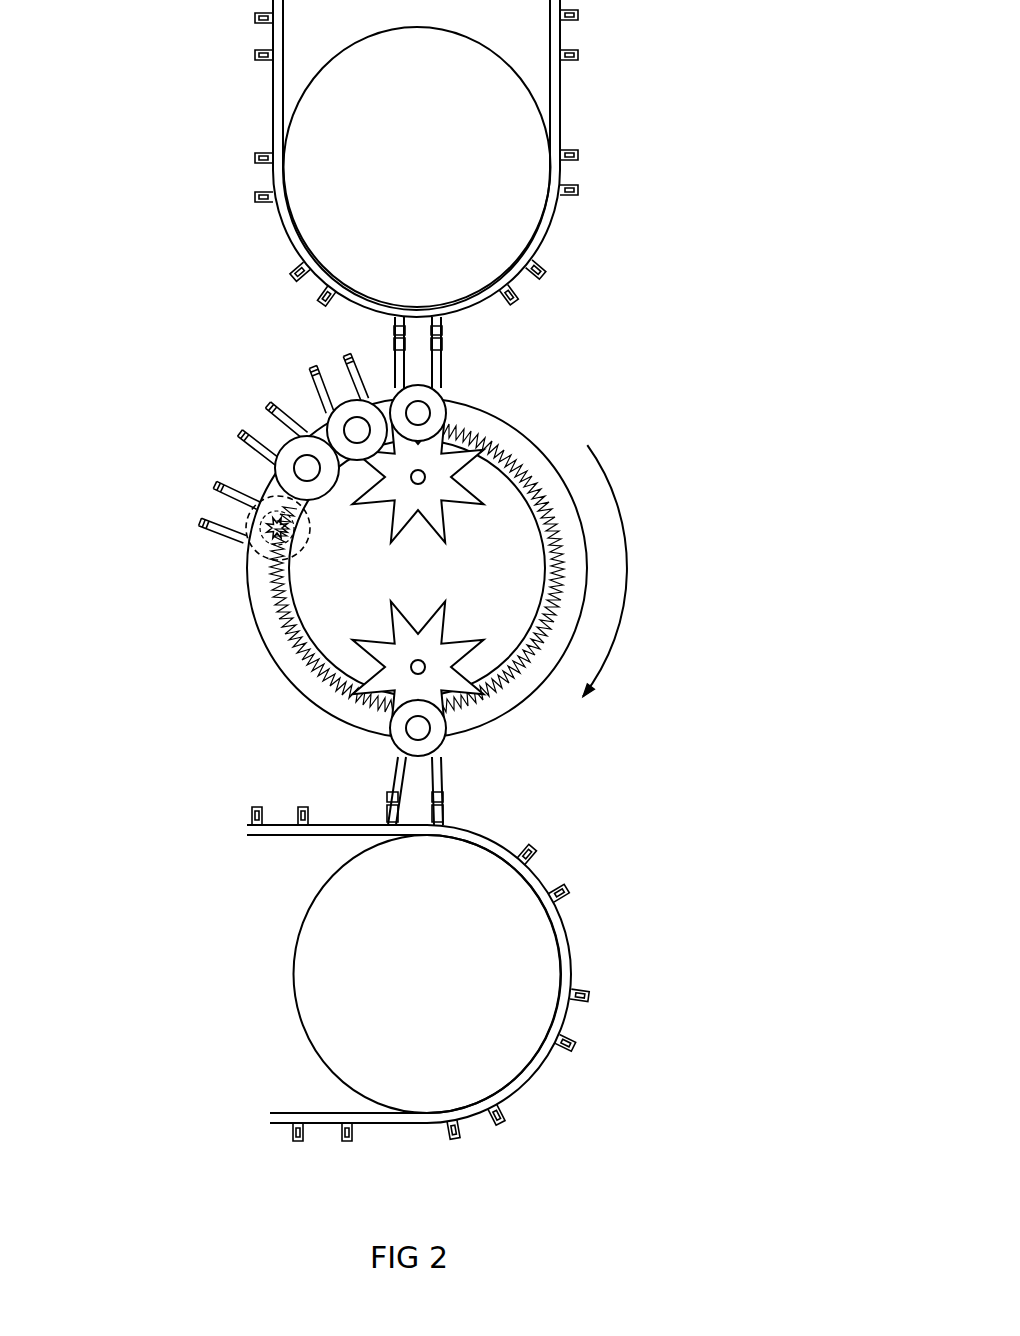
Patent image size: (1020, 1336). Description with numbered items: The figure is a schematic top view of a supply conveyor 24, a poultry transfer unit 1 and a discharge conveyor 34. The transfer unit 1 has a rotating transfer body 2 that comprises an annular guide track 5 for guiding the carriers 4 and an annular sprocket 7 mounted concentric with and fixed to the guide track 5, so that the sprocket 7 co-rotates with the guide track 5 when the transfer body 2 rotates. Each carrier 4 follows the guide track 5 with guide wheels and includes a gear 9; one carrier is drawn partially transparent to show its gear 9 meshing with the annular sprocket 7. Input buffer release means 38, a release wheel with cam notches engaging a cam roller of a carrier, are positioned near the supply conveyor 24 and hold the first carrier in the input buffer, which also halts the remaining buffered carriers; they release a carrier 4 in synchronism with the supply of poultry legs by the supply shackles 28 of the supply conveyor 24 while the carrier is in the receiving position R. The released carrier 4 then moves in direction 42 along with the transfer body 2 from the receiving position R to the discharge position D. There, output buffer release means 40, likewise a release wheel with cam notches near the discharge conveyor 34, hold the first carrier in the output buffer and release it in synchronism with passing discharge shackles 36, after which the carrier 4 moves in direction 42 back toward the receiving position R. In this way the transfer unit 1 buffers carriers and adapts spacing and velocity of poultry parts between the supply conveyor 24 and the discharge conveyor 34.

The poultry transfer unit 1 is at (246, 362).
The transfer body 2 is at (539, 715).
The carrier 4 is at (257, 469).
The annular guide track 5 is at (401, 554).
The annular sprocket 7 is at (272, 620).
The gear 9 is at (255, 521).
The supply conveyor 24 is at (631, 203).
The supply shackles 28 is at (242, 160).
The discharge conveyor 34 is at (622, 932).
The discharge shackles 36 is at (237, 820).
The input buffer release means 38 is at (463, 420).
The output buffer release means 40 is at (357, 657).
The direction 42 is at (627, 571).
The receiving position R is at (463, 345).
The discharge position D is at (465, 804).